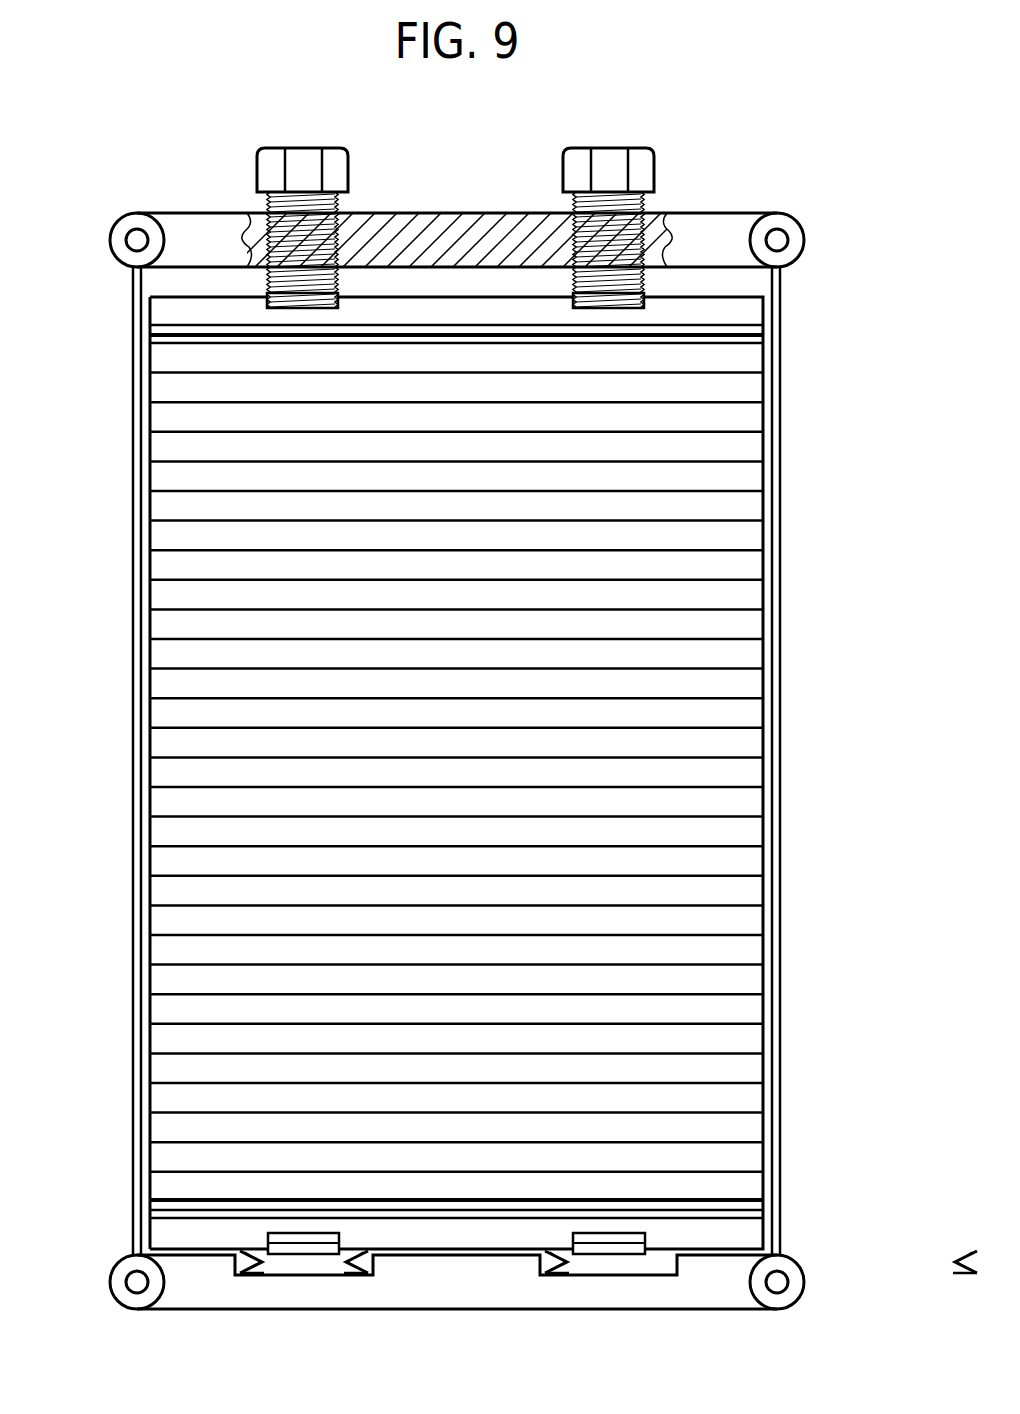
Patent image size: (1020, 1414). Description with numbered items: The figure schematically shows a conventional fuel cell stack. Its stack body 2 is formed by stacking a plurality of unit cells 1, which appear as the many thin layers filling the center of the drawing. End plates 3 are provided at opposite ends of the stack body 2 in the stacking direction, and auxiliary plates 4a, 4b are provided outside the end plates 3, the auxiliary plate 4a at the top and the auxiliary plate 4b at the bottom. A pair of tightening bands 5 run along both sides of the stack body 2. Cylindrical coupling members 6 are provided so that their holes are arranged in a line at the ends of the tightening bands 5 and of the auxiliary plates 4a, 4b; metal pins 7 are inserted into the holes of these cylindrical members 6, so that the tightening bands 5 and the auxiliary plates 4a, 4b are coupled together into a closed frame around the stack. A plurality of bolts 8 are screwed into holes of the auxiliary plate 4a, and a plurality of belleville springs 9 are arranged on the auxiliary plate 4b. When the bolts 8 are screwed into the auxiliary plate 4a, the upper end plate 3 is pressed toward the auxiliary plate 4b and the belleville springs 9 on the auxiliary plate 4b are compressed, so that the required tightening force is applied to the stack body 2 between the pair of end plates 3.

The unit cell 1 is at (742, 745).
The stack body 2 is at (840, 730).
The end plate 3 is at (748, 313).
The auxiliary plate 4a is at (699, 230).
The auxiliary plate 4b is at (714, 1287).
The tightening band 5 is at (132, 624).
The cylindrical coupling member 6 is at (806, 240).
The metal pin 7 is at (137, 228).
The bolt 8 is at (302, 172).
The belleville spring 9 is at (350, 1272).